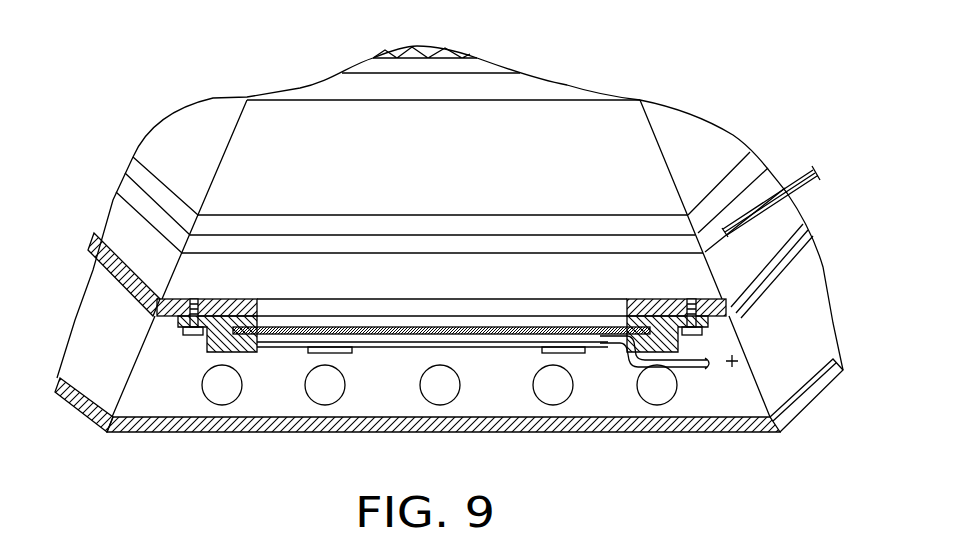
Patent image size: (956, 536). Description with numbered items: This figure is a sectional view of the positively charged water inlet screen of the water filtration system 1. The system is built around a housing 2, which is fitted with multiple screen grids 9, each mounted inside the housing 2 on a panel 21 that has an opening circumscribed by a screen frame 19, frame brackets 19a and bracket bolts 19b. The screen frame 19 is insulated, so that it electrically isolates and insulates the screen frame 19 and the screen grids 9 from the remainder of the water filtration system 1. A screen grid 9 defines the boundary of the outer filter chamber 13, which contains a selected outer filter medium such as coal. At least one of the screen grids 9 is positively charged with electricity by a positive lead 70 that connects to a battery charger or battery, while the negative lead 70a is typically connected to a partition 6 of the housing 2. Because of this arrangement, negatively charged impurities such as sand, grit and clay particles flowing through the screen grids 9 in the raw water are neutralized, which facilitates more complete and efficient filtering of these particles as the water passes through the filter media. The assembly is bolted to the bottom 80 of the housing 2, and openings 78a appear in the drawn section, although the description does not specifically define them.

The water filtration system 1 is at (734, 88).
The housing 2 is at (57, 408).
The partition 6 is at (173, 277).
The screen grid 9 is at (490, 97).
The outer filter chamber 13 is at (692, 140).
The screen frame 19 is at (222, 303).
The frame bracket 19a is at (245, 352).
The bracket bolt 19b is at (193, 343).
The panel 21 is at (117, 257).
The positive lead 70 is at (690, 370).
The negative lead 70a is at (805, 193).
The cooling channels 78a is at (317, 405).
The bottom 80 is at (506, 396).